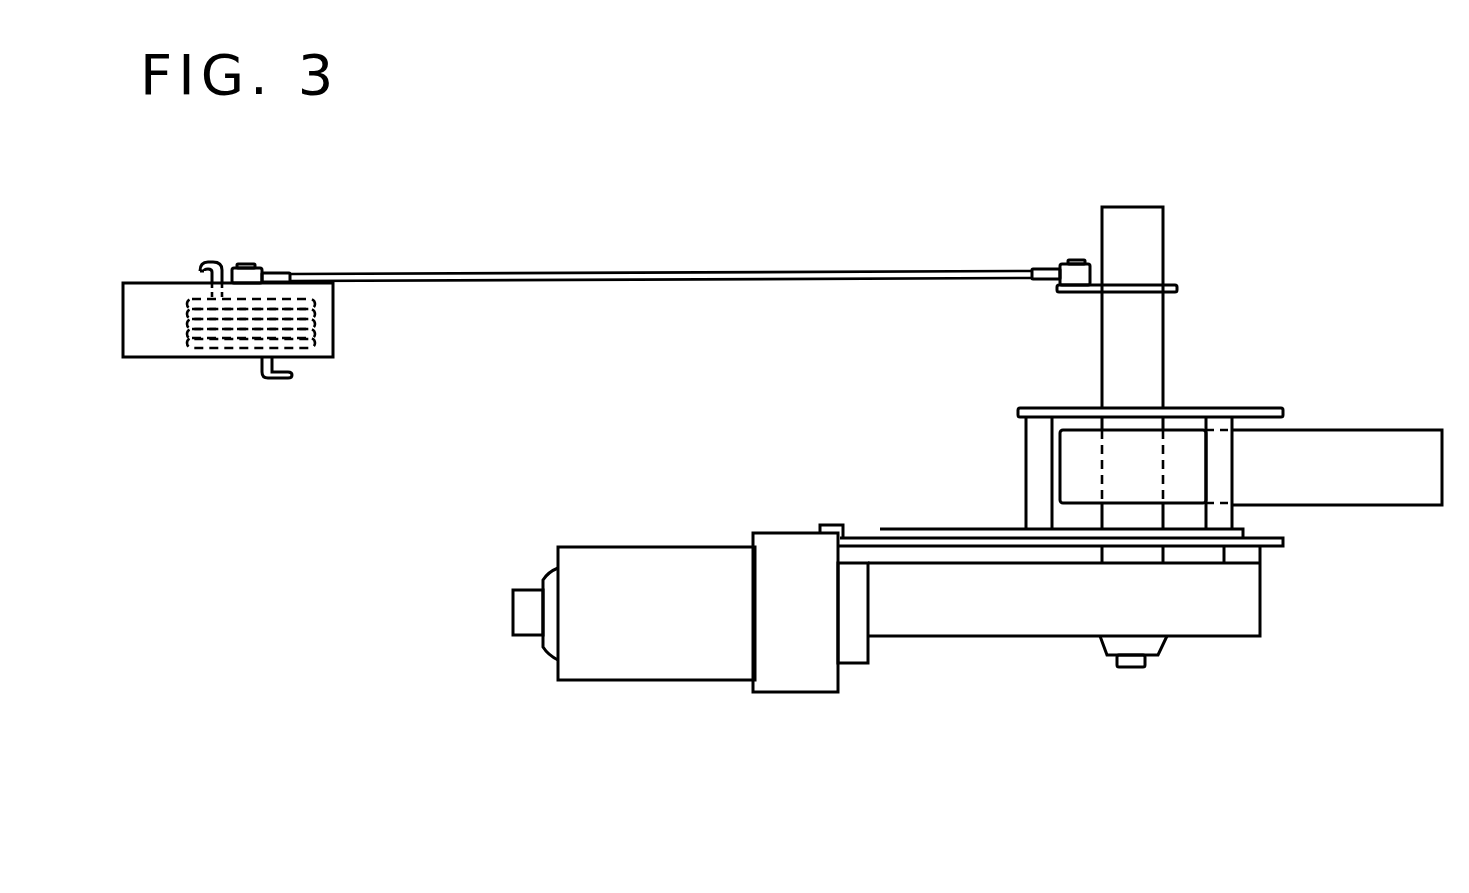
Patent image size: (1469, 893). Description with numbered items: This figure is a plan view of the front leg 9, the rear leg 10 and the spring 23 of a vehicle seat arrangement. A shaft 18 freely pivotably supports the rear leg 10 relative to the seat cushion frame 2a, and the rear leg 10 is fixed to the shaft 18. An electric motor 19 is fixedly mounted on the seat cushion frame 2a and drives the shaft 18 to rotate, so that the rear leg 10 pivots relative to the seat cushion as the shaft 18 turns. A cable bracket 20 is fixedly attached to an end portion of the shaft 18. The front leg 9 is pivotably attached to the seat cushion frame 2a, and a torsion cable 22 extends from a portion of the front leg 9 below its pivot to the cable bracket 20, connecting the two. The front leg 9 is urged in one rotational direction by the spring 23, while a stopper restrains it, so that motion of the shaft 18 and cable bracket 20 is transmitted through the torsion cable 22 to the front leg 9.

The front leg 9 is at (333, 330).
The spring 23 is at (222, 348).
The torsion cable 22 is at (755, 270).
The cable bracket 20 is at (1178, 290).
The shaft 18 is at (1150, 353).
The rear leg 10 is at (1375, 430).
The seat cushion frame 2a is at (1245, 533).
The electric motor 19 is at (666, 680).